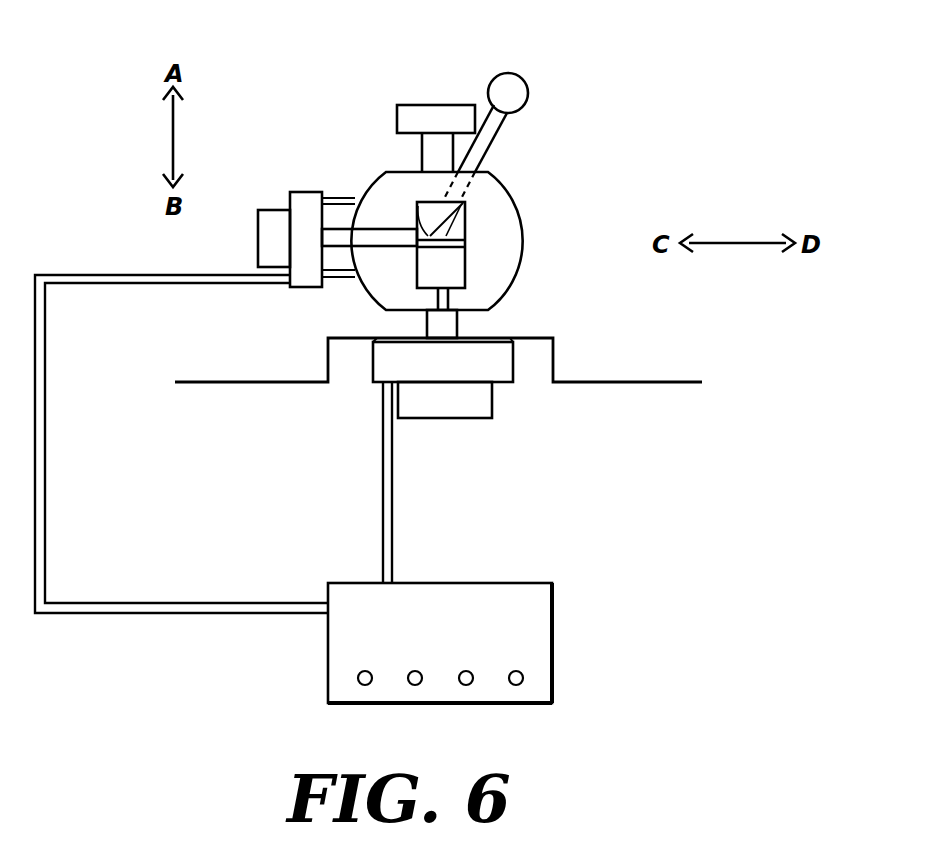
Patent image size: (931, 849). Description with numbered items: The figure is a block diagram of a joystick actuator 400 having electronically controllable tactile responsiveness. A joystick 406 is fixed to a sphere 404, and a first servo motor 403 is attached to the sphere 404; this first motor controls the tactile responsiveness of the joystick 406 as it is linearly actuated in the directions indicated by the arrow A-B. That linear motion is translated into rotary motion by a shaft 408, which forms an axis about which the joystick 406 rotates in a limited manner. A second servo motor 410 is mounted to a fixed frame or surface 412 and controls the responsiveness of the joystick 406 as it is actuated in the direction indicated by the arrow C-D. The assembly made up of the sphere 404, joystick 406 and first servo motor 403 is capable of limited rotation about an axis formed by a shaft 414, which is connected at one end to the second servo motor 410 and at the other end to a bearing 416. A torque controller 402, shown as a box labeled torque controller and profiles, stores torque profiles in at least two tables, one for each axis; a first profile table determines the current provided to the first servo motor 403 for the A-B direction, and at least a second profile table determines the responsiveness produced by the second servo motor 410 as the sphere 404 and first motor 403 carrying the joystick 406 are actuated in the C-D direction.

The joystick actuator 400 is at (577, 192).
The torque controller 402 is at (552, 603).
The first servo motor 403 is at (298, 192).
The sphere 404 is at (421, 235).
The joystick 406 is at (515, 92).
The shaft 408 is at (393, 243).
The second servo motor 410 is at (487, 408).
The fixed frame or surface 412 is at (607, 382).
The shaft 414 is at (452, 325).
The bearing 416 is at (448, 106).